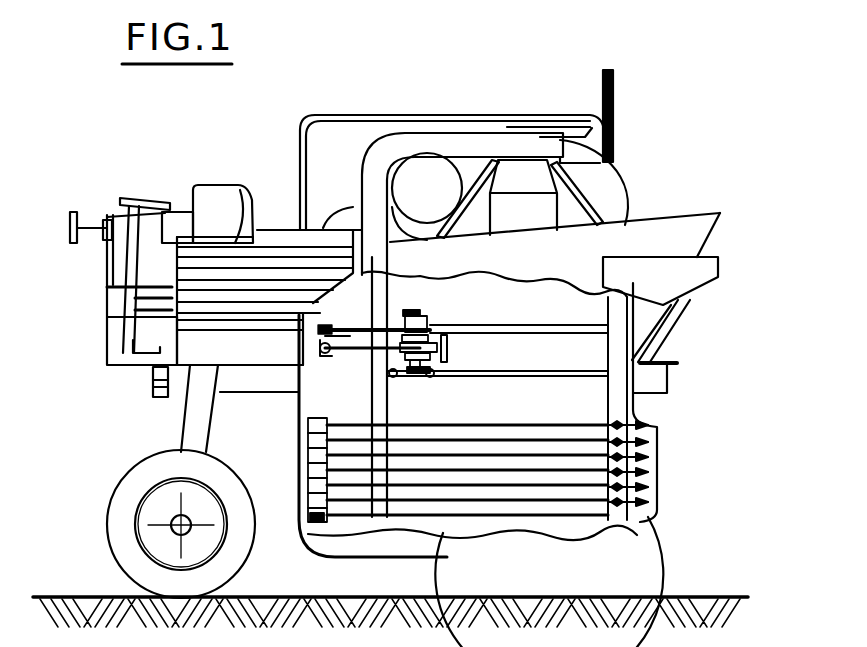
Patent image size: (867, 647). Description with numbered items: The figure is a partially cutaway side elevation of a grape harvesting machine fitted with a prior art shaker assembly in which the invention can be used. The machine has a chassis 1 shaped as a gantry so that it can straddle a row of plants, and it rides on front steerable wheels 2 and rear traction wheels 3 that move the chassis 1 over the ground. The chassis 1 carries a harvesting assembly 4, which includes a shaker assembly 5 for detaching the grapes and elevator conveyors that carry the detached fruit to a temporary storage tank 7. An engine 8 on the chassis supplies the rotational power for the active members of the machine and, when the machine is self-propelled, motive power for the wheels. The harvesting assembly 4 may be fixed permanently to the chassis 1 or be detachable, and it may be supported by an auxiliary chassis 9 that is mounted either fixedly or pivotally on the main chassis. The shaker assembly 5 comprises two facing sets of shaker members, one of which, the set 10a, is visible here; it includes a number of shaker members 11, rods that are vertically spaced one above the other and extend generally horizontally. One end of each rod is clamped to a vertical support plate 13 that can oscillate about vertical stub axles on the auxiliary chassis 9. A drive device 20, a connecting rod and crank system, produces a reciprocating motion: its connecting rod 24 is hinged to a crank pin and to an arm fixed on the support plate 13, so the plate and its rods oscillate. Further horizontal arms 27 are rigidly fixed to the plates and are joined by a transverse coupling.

The chassis 1 is at (268, 371).
The front steerable wheels 2 is at (118, 532).
The rear traction wheels 3 is at (612, 552).
The harvesting assembly 4 is at (288, 462).
The shaker assembly 5 is at (472, 410).
The temporary storage tank 7 is at (675, 235).
The engine 8 is at (276, 216).
The auxiliary chassis 9 is at (492, 327).
The set of shaker members 10a is at (507, 417).
The shaker members 11 is at (447, 458).
The vertical support plate 13 is at (324, 402).
The drive device 20 is at (458, 356).
The connecting rod 24 is at (370, 362).
The horizontal arms 27 is at (348, 327).